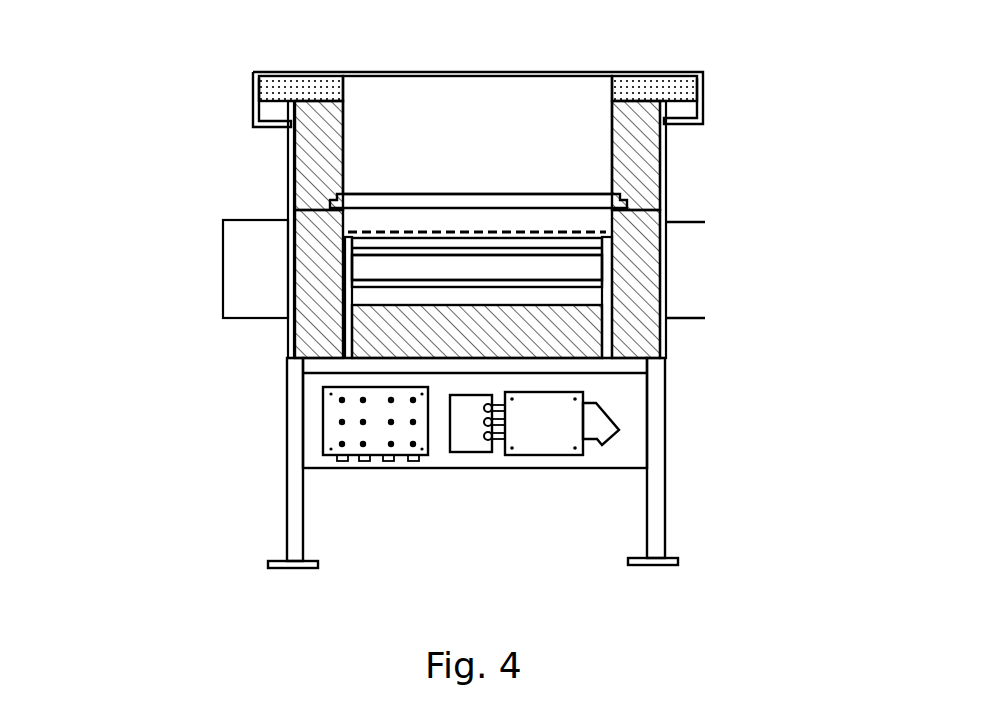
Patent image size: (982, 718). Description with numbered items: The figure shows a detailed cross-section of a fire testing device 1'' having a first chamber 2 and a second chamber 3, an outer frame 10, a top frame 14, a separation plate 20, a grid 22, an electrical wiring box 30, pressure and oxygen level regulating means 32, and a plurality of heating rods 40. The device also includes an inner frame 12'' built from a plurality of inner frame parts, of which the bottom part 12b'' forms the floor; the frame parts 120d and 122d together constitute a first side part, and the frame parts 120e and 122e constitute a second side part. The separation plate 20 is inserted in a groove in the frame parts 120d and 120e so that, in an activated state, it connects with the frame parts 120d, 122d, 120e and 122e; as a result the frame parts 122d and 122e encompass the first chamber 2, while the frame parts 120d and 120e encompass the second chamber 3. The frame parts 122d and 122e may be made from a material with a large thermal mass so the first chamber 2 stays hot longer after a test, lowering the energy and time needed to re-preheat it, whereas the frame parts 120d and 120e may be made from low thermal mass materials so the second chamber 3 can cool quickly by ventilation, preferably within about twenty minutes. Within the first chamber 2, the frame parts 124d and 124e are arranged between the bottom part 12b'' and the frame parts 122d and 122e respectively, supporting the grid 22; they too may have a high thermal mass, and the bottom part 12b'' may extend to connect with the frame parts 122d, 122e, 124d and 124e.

The fire testing device 1'' is at (372, 71).
The second chamber 3 is at (473, 109).
The top frame 14 is at (517, 66).
The inner frame 12'' is at (556, 228).
The inner frame part 120e is at (244, 155).
The inner frame part 120d is at (706, 155).
The inner frame part 122e is at (240, 280).
The inner frame part 122d is at (709, 284).
The inner frame part 124e is at (230, 297).
The inner frame part 124d is at (694, 297).
The bottom part 12b'' is at (589, 357).
The separation plate 20 is at (478, 165).
The grid 22 is at (355, 200).
The heating rods 40 is at (379, 262).
The first chamber 2 is at (574, 267).
The outer frame 10 is at (398, 463).
The pressure and oxygen level regulating means 32 is at (258, 410).
The electrical wiring box 30 is at (636, 443).